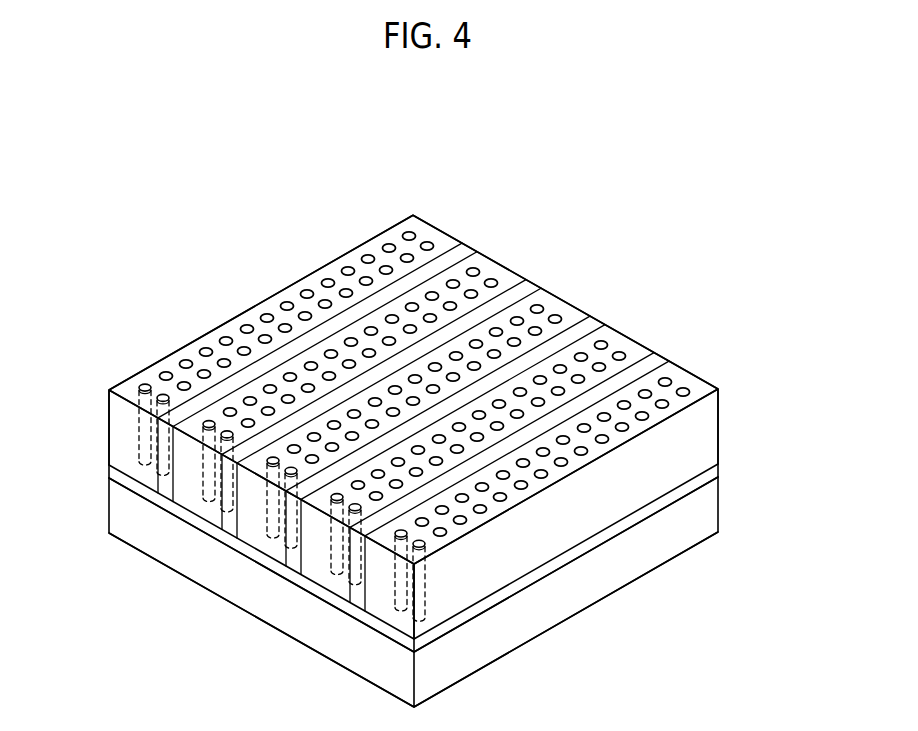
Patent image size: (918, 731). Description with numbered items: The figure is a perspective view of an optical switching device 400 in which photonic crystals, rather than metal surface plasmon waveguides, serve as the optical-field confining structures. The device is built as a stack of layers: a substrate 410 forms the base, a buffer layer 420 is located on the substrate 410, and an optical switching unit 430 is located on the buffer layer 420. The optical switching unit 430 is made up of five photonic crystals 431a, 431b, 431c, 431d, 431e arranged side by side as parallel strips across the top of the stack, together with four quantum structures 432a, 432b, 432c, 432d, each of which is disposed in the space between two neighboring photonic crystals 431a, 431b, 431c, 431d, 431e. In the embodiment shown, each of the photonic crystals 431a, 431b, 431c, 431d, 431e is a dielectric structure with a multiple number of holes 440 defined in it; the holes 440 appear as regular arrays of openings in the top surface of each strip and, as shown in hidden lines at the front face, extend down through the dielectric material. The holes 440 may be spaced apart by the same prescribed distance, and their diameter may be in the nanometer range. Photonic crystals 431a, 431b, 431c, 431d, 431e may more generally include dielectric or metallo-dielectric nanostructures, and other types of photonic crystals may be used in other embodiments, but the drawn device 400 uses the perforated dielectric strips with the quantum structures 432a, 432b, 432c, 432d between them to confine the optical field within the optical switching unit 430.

The optical switching device 400 is at (762, 377).
The substrate 410 is at (114, 512).
The buffer layer 420 is at (110, 473).
The optical switching unit 430 is at (110, 432).
The photonic crystal 431a is at (433, 222).
The photonic crystal 431b is at (503, 263).
The photonic crystal 431c is at (572, 302).
The photonic crystal 431d is at (632, 337).
The photonic crystal 431e is at (700, 373).
The quantum structure 432a is at (467, 243).
The quantum structure 432b is at (534, 280).
The quantum structure 432c is at (597, 320).
The quantum structure 432d is at (662, 358).
The holes 440 is at (143, 385).